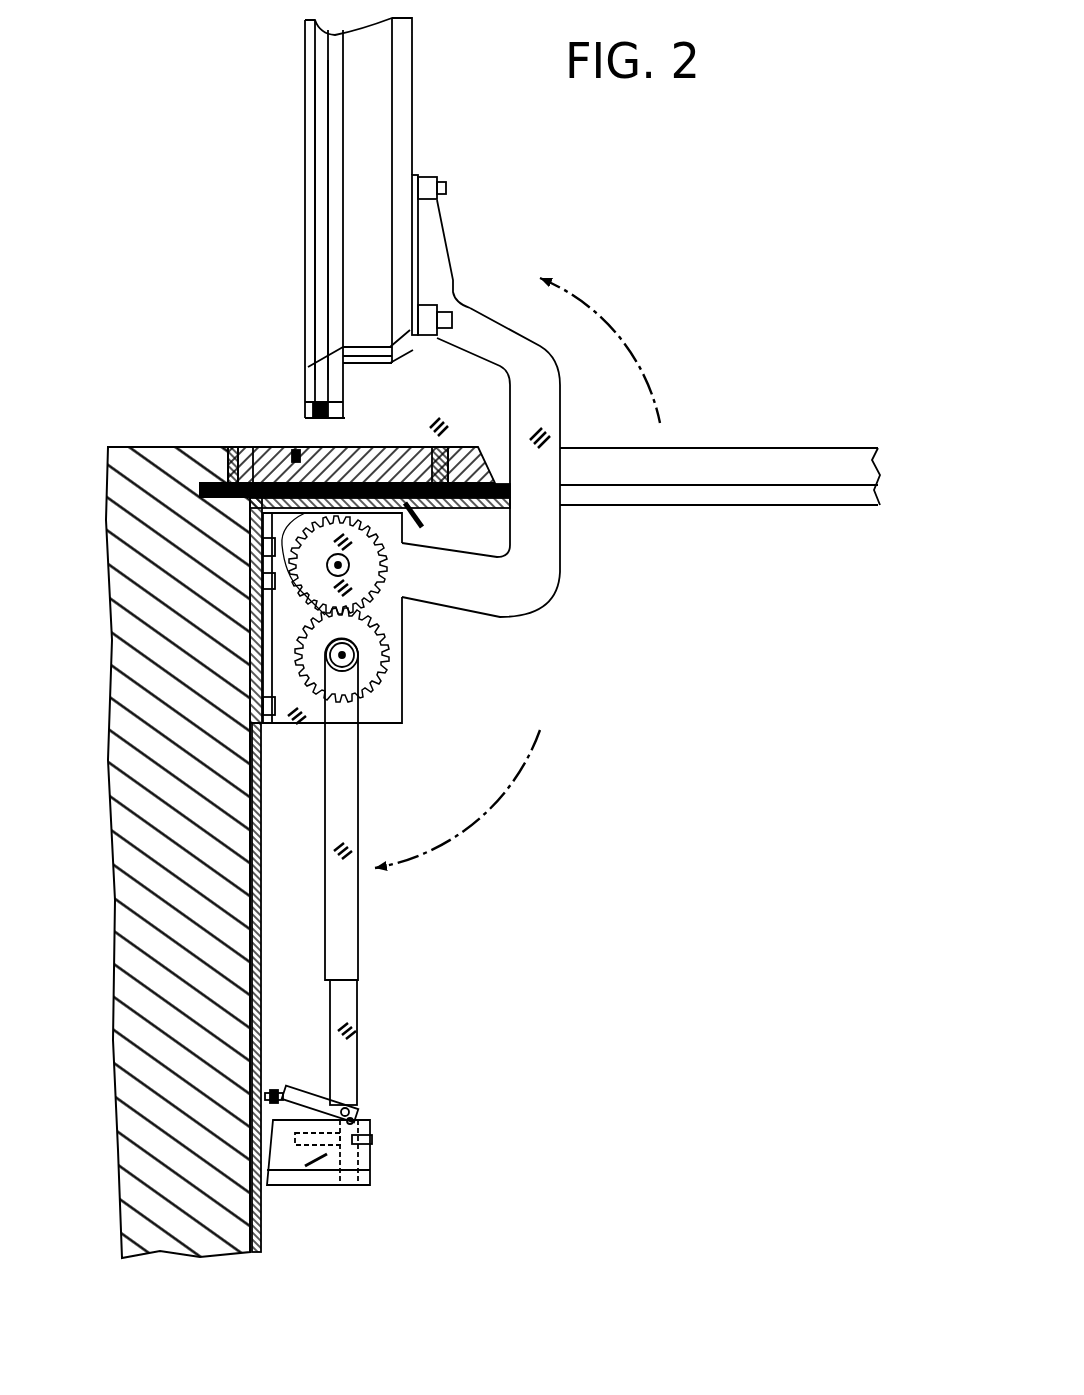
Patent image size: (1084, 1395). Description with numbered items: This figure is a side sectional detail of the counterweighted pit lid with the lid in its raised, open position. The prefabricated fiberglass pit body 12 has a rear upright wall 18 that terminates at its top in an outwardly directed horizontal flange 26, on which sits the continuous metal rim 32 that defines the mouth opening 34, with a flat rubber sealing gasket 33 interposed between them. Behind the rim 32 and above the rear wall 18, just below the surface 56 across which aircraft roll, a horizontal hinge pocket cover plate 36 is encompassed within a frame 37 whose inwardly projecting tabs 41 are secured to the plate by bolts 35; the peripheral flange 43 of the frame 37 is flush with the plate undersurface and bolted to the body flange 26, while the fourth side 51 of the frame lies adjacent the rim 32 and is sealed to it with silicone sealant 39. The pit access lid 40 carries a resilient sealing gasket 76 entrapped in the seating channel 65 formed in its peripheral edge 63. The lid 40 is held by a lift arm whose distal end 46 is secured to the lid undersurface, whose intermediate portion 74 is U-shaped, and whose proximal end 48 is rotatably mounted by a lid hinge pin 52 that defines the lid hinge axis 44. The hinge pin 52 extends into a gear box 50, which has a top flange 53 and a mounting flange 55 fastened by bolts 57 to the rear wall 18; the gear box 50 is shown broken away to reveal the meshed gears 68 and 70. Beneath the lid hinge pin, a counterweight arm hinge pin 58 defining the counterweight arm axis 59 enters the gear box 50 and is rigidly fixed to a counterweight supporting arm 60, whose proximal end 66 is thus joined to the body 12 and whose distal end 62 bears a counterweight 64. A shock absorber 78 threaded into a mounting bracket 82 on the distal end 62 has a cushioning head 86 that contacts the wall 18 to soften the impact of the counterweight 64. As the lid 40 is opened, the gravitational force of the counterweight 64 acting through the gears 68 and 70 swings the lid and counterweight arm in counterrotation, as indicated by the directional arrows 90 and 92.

The pit body 12 is at (250, 875).
The rear upright wall 18 is at (262, 1213).
The horizontal flange 26 is at (212, 490).
The metal rim 32 is at (765, 465).
The sealing gasket 33 is at (430, 515).
The mouth opening 34 is at (750, 497).
The bolts 35 is at (253, 447).
The hinge pocket cover plate 36 is at (412, 440).
The frame 37 is at (230, 450).
The silicone sealant 39 is at (467, 447).
The pit access lid 40 is at (300, 74).
The tabs 41 is at (248, 448).
The peripheral flange 43 is at (222, 472).
The lid hinge axis of rotation 44 is at (335, 566).
The distal end 46 is at (440, 225).
The proximal end 48 is at (540, 578).
The gear box 50 is at (393, 727).
The fourth side 51 is at (460, 447).
The lid hinge pin 52 is at (302, 600).
The top flange 53 is at (298, 447).
The mounting flange 55 is at (257, 665).
The surface 56 is at (128, 447).
The bolts 57 is at (263, 548).
The counterweight arm hinge pin 58 is at (356, 665).
The counterweight arm axis of rotation 59 is at (356, 656).
The counterweight supporting arm 60 is at (582, 530).
The distal end 62 is at (358, 1083).
The peripheral edge 63 is at (305, 170).
The counterweight 64 is at (372, 1160).
The gasket seating channel 65 is at (323, 118).
The proximal end 66 is at (332, 745).
The gear 68 is at (372, 640).
The gear 70 is at (352, 565).
The intermediate portion 74 is at (540, 410).
The sealing gasket 76 is at (335, 410).
The shock absorber 78 is at (283, 1075).
The mounting bracket 82 is at (320, 1100).
The cushioning head 86 is at (268, 1093).
The directional arrow 90 is at (620, 338).
The directional arrow 92 is at (527, 833).